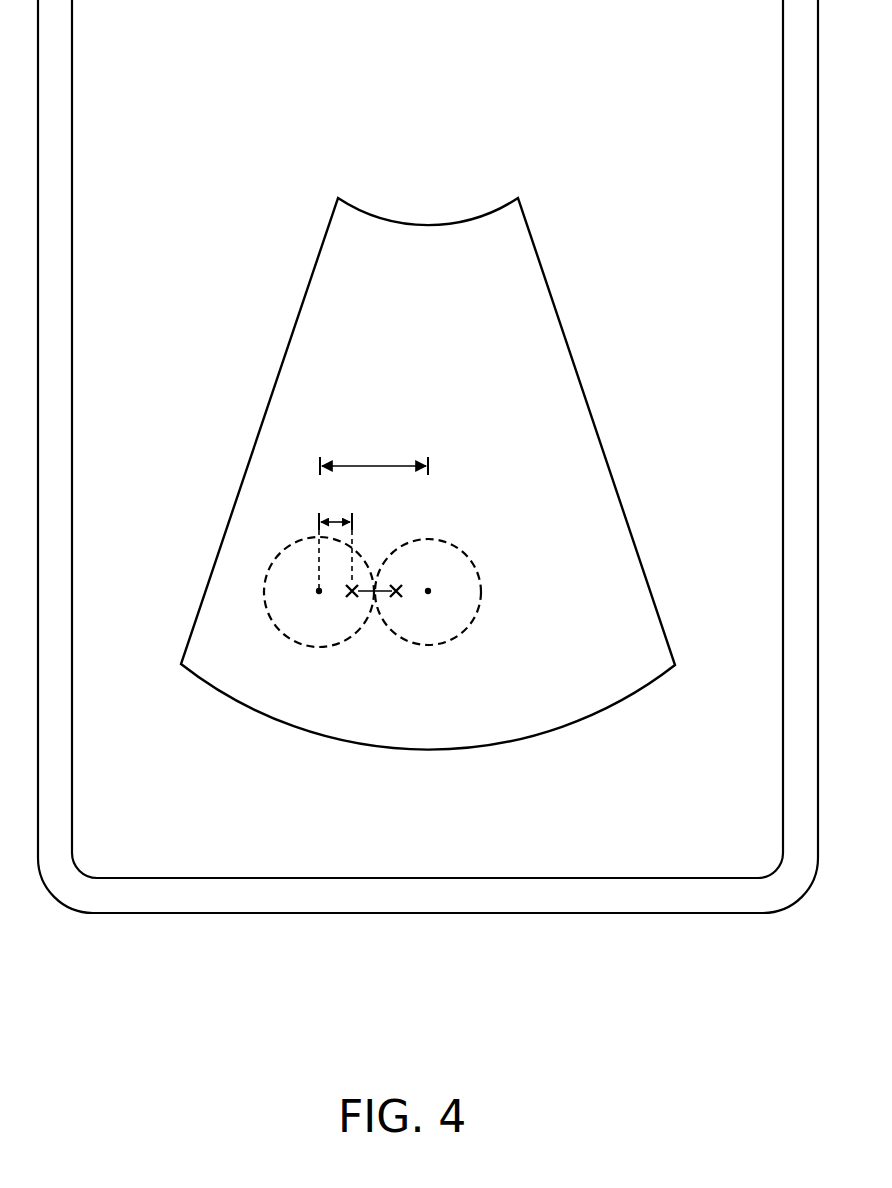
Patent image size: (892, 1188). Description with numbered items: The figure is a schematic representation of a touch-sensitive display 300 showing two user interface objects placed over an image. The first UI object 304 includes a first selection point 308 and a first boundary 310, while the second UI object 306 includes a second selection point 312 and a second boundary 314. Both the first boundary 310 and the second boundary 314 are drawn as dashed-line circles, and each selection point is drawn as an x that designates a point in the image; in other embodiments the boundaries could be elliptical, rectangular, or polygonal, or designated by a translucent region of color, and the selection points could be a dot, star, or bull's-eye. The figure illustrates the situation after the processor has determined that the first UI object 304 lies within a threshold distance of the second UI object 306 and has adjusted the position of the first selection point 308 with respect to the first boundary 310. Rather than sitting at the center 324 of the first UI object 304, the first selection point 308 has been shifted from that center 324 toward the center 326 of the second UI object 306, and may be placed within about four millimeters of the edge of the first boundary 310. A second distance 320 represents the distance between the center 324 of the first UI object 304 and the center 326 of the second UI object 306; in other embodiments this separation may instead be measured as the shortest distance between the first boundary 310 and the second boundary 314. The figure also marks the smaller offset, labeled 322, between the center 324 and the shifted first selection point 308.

The touch-sensitive display 300 is at (440, 62).
The first UI object 304 is at (302, 662).
The second UI object 306 is at (481, 596).
The first selection point 308 is at (352, 594).
The first boundary 310 is at (268, 570).
The second selection point 312 is at (398, 588).
The second boundary 314 is at (481, 577).
The second distance 320 is at (373, 463).
The offset distance between center and marker 322 is at (338, 512).
The center of the first UI object 324 is at (319, 591).
The center of the second UI object 326 is at (428, 591).